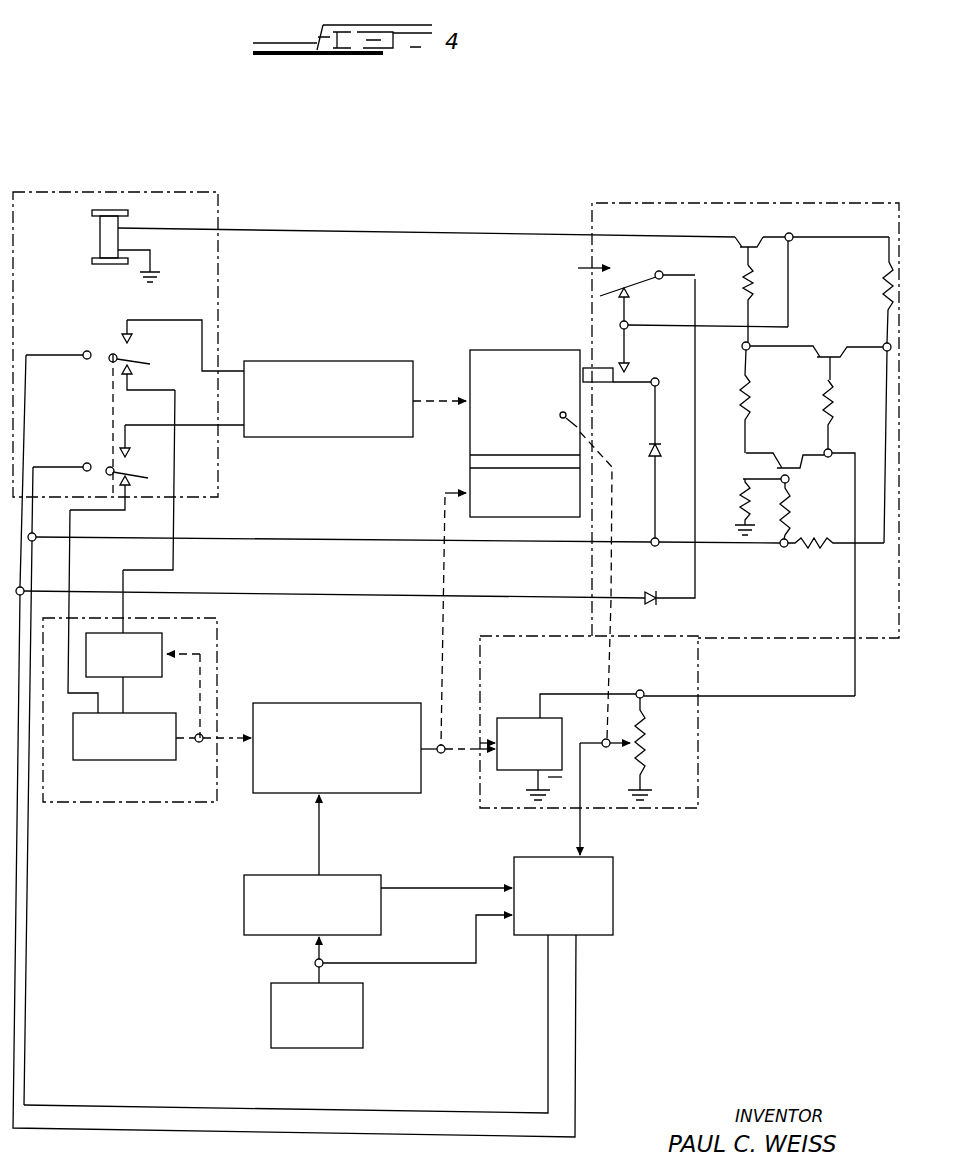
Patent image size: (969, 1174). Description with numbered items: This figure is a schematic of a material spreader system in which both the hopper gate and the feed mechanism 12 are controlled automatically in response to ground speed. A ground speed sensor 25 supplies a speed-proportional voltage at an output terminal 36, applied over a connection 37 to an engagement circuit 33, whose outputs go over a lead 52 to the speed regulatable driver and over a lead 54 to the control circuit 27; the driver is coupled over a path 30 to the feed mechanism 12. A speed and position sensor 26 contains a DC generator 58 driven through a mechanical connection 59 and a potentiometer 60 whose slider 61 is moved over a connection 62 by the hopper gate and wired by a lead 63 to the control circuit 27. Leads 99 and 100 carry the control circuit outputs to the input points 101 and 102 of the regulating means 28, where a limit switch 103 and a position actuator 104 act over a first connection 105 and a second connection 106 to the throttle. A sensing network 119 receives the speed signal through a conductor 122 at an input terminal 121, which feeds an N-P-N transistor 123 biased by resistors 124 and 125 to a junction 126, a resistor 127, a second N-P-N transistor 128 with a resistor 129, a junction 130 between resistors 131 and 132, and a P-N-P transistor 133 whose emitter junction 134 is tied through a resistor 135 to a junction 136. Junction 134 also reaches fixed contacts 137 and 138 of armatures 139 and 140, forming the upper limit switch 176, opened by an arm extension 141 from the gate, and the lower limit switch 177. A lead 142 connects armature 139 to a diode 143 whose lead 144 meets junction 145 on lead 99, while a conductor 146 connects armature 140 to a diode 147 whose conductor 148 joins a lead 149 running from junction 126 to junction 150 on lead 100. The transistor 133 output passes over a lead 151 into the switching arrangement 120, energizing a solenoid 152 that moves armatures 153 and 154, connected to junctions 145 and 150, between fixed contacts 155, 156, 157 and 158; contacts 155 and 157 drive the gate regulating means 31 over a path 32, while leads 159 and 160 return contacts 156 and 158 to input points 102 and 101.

The feed mechanism 12 is at (470, 472).
The ground speed sensor 25 is at (270, 1021).
The speed and position sensor 26 is at (702, 790).
The control circuit 27 is at (615, 907).
The regulating means 28 is at (185, 804).
The path 30 is at (437, 637).
The regulating means 31 is at (335, 360).
The path 32 is at (438, 398).
The engagement circuit 33 is at (242, 905).
The output terminal 36 is at (315, 980).
The connection 37 is at (315, 958).
The lead 52 is at (320, 847).
The lead 54 is at (427, 885).
The DC generator 58 is at (505, 716).
The mechanical connection 59 is at (462, 760).
The potentiometer 60 is at (648, 748).
The slider 61 is at (606, 749).
The connection 62 is at (606, 568).
The lead 63 is at (582, 828).
The lead 99 is at (328, 1135).
The lead 100 is at (215, 1108).
The input point 101 is at (80, 630).
The input point 102 is at (170, 628).
The limit switch 103 is at (137, 678).
The position actuator 104 is at (110, 762).
The first connection 105 is at (203, 687).
The second connection 106 is at (233, 740).
The sensing network 119 is at (622, 198).
The switching arrangement 120 is at (228, 220).
The input terminal 121 is at (831, 451).
The conductor 122 is at (815, 698).
The N-P-N transistor 123 is at (788, 452).
The resistor 124 is at (726, 520).
The resistor 125 is at (790, 510).
The junction 126 is at (782, 548).
The resistor 127 is at (805, 548).
The N-P-N transistor 128 is at (835, 345).
The resistor 129 is at (823, 402).
The junction 130 is at (748, 350).
The resistor 131 is at (740, 412).
The resistor 132 is at (743, 248).
The P-N-P transistor 133 is at (746, 230).
The junction 134 is at (795, 234).
The resistor 135 is at (882, 278).
The junction 136 is at (838, 390).
The fixed contact 137 is at (630, 292).
The fixed contact 138 is at (628, 366).
The armature 139 is at (650, 266).
The armature 140 is at (742, 349).
The arm extension 141 is at (600, 366).
The lead 142 is at (693, 465).
The diode 143 is at (646, 592).
The lead 144 is at (316, 593).
The junction 145 is at (24, 594).
The conductor 146 is at (660, 412).
The diode 147 is at (660, 452).
The conductor 148 is at (659, 496).
The lead 149 is at (316, 537).
The junction 150 is at (35, 540).
The lead 151 is at (440, 226).
The solenoid 152 is at (98, 238).
The armature 153 is at (100, 360).
The armature 154 is at (105, 462).
The fixed contact 155 is at (124, 337).
The fixed contact 156 is at (133, 368).
The fixed contact 157 is at (130, 455).
The fixed contact 158 is at (118, 484).
The lead 159 is at (175, 535).
The lead 160 is at (70, 550).
The limit switch 176 is at (572, 270).
The limit switch 177 is at (636, 388).